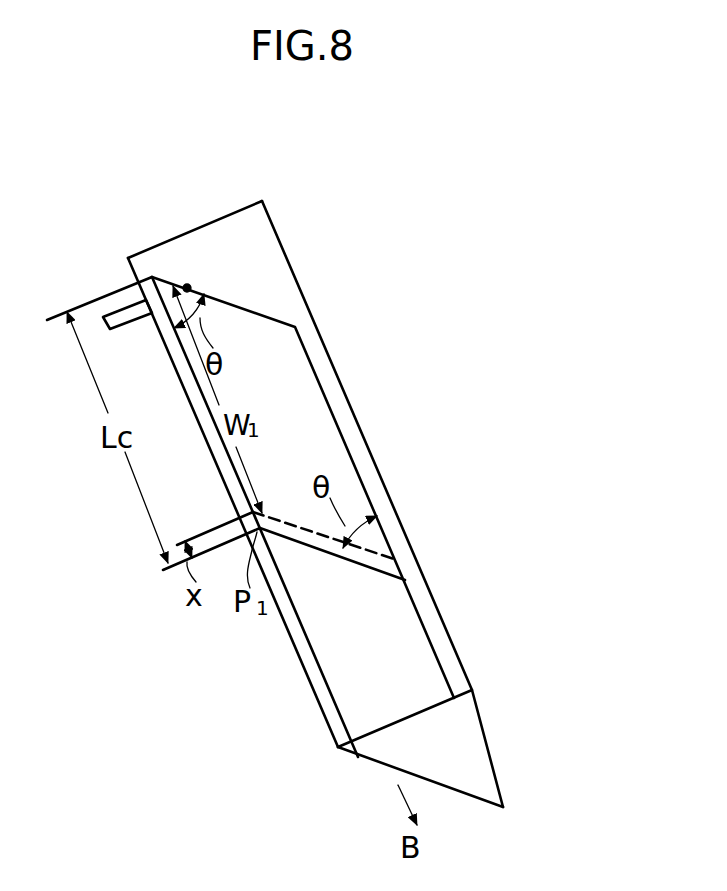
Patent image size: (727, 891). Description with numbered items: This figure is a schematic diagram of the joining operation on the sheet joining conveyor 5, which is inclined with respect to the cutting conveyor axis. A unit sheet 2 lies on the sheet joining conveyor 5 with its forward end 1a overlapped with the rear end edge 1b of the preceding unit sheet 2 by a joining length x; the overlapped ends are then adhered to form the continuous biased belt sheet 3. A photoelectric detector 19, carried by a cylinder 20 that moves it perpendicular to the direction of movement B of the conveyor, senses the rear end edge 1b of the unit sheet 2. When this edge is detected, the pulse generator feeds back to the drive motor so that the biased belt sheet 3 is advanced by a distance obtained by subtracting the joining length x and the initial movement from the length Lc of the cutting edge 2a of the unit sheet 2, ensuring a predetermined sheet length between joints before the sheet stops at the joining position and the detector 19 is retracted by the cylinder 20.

The forward end 1a is at (377, 570).
The end edge 1b is at (188, 288).
The unit sheet 2 is at (335, 380).
The cutting edge 2a is at (347, 440).
The biased belt sheet 3 is at (302, 633).
The sheet joining conveyor 5 is at (263, 268).
The photoelectric detector 19 is at (187, 287).
The cylinder 20 is at (120, 312).